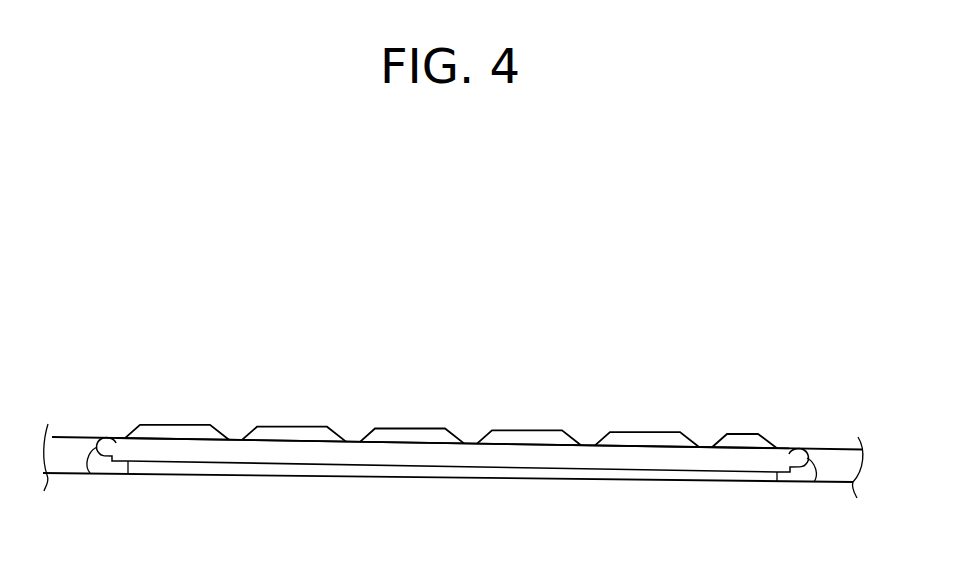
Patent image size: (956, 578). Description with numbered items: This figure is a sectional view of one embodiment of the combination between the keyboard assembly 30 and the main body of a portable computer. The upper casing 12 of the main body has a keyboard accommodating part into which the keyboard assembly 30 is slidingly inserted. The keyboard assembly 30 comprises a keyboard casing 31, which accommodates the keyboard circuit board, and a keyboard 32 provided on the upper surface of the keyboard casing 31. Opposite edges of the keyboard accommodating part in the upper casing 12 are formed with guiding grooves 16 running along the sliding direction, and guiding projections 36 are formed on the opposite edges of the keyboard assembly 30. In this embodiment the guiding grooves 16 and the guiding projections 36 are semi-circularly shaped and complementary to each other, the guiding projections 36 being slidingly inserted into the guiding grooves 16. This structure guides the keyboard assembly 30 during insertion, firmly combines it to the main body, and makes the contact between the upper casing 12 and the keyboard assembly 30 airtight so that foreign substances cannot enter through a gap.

The upper casing 12 is at (58, 473).
The guiding groove 16 is at (90, 473).
The keyboard assembly 30 is at (474, 419).
The keyboard casing 31 is at (432, 466).
The keyboard 32 is at (652, 432).
The guiding projection 36 is at (103, 437).